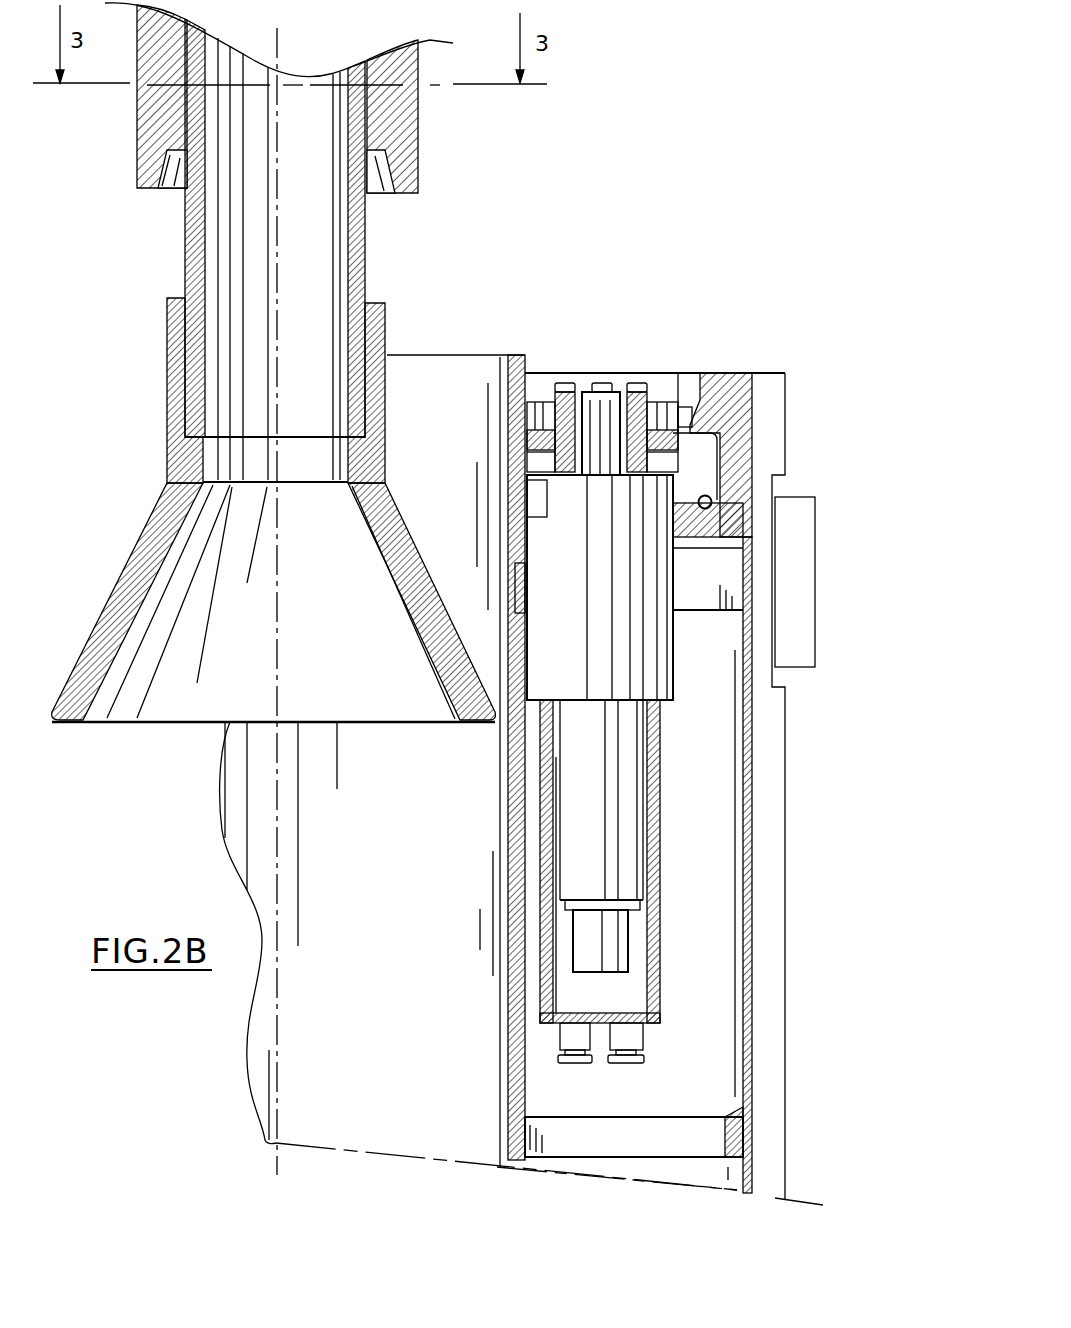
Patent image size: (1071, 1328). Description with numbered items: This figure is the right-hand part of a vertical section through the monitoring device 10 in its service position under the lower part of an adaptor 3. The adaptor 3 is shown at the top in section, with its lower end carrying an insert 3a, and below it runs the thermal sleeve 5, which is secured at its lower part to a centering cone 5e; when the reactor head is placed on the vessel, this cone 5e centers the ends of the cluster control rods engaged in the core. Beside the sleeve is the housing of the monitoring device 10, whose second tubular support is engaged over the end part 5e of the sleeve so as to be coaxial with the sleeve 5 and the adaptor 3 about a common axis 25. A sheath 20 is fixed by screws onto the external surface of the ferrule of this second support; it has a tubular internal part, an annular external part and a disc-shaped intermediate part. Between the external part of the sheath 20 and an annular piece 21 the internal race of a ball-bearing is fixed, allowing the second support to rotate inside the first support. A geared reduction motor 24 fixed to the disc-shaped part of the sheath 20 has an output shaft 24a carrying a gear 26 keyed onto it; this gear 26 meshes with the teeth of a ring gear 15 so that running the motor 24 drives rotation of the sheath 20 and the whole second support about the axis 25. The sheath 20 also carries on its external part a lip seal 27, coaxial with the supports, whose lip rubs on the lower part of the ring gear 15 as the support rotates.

The adaptor 3 is at (434, 106).
The wedge insert 3a is at (397, 172).
The thermal sleeve 5 is at (368, 287).
The centering cone 5e is at (407, 525).
The monitoring device 10 is at (401, 981).
The ring gear 15 is at (675, 403).
The sheath 20 is at (527, 372).
The annular piece 21 is at (672, 533).
The geared reduction motor 24 is at (647, 643).
The output shaft 24a is at (597, 430).
The axis 25 is at (275, 565).
The gear 26 is at (508, 422).
The lip seal 27 is at (725, 453).